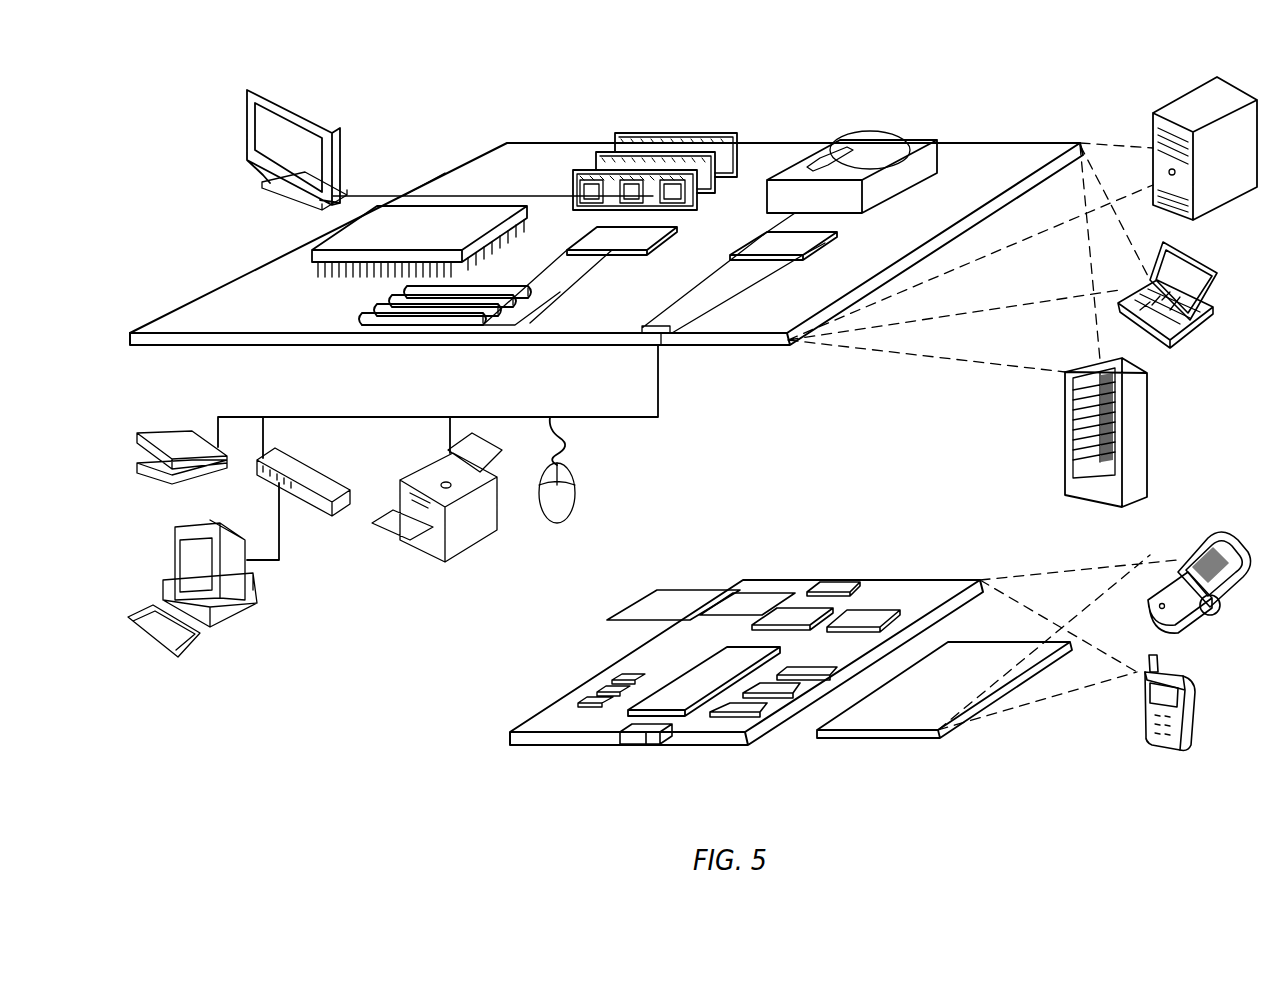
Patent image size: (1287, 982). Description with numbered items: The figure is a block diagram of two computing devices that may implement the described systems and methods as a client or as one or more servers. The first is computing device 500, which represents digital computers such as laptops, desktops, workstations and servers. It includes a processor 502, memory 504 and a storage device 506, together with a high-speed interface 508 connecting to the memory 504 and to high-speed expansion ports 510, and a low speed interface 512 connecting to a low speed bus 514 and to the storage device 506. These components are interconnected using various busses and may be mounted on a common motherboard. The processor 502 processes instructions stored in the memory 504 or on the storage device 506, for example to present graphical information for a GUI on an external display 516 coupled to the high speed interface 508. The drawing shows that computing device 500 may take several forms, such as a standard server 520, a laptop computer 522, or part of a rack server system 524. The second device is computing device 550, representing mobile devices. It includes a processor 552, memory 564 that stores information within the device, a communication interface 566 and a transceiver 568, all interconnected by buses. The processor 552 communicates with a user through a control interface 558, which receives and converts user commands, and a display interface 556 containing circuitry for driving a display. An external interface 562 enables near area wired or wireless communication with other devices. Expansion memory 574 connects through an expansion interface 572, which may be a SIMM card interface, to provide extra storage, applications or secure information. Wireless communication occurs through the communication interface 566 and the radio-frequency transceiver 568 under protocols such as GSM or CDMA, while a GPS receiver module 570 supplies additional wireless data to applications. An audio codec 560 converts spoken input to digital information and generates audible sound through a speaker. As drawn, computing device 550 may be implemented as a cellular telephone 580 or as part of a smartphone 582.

The computing device 500 is at (434, 114).
The processor 502 is at (312, 252).
The memory 504 is at (626, 135).
The storage device 506 is at (850, 138).
The high-speed interface 508 is at (580, 237).
The high-speed expansion ports 510 is at (387, 308).
The low speed interface 512 is at (768, 240).
The low speed bus 514 is at (667, 335).
The display 516 is at (248, 95).
The standard server 520 is at (1152, 132).
The laptop computer 522 is at (1213, 275).
The rack server system 524 is at (1065, 460).
The computing device 550 is at (482, 745).
The processor 552 is at (685, 705).
The display interface 556 is at (752, 715).
The control interface 558 is at (780, 693).
The audio codec 560 is at (805, 677).
The external interface 562 is at (646, 725).
The memory 564 is at (598, 700).
The communication interface 566 is at (792, 612).
The transceiver 568 is at (865, 612).
The GPS receiver module 570 is at (842, 585).
The expansion interface 572 is at (720, 593).
The expansion memory 574 is at (655, 590).
The cellular telephone 580 is at (1203, 547).
The smartphone 582 is at (1142, 710).